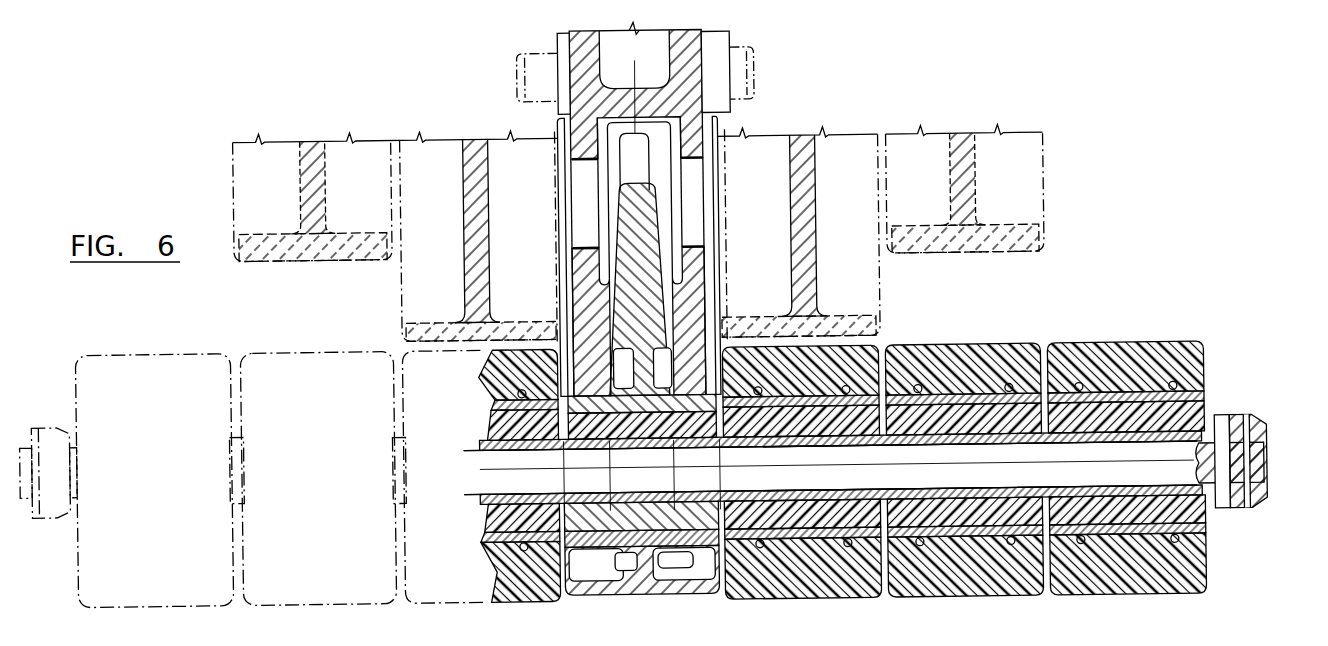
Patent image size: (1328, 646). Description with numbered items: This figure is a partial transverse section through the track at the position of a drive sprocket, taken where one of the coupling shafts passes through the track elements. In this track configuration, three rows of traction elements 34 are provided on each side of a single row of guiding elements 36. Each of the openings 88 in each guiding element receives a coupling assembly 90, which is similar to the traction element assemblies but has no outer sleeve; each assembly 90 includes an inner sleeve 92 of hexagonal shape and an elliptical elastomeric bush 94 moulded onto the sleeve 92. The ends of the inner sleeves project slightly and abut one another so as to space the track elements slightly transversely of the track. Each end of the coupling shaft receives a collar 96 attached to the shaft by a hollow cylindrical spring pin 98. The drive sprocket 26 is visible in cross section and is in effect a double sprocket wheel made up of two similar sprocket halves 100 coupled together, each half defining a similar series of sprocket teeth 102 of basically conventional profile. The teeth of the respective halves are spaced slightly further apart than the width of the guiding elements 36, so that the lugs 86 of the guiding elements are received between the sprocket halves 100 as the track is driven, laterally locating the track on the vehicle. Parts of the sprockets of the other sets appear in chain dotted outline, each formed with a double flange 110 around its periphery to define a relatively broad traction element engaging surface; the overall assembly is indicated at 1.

The brake assembly 1 is at (908, 643).
The drive sprocket 26 is at (765, 77).
The traction elements 34 is at (1018, 336).
The guiding elements 36 is at (716, 597).
The lugs 86 is at (636, 245).
The openings 88 is at (691, 520).
The coupling assembly 90 is at (690, 372).
The inner sleeve 92 is at (652, 500).
The elastomeric bush 94 is at (623, 515).
The collar 96 is at (1258, 503).
The spring pin 98 is at (1233, 429).
The sprocket halves 100 is at (565, 185).
The sprocket teeth 102 is at (540, 350).
The double flange 110 is at (400, 330).